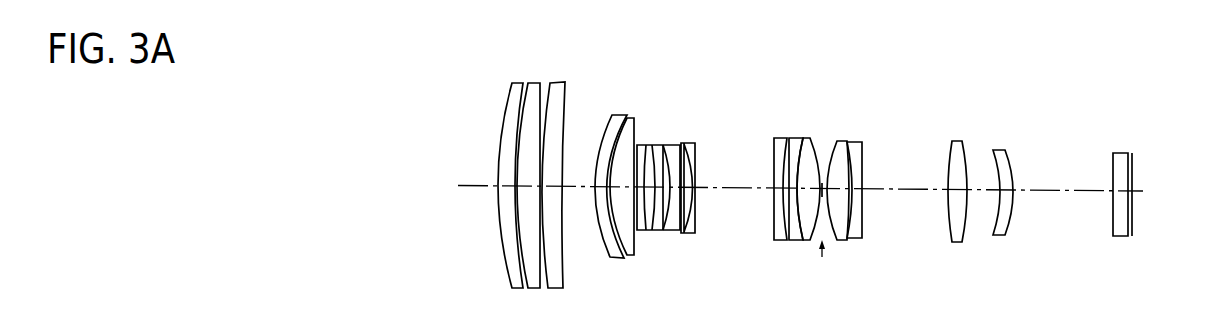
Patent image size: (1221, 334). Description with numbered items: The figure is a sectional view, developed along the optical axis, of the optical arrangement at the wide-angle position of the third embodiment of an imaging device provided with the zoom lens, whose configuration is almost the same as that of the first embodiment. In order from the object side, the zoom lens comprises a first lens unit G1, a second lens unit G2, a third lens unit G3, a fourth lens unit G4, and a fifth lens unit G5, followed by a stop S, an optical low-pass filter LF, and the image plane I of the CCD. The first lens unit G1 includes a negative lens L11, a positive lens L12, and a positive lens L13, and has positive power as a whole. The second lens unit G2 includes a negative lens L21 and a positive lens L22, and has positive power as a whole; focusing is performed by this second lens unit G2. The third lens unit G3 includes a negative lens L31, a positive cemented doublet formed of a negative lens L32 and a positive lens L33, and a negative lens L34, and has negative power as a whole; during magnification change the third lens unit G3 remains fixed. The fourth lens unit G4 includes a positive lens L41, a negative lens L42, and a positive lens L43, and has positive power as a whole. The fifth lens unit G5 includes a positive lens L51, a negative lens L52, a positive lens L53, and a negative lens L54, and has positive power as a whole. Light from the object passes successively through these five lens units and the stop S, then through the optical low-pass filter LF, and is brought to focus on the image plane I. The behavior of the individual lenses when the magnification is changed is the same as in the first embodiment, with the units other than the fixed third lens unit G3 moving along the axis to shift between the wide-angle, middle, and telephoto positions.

The first lens unit G1 is at (526, 185).
The negative lens L11 is at (517, 83).
The positive lens L12 is at (535, 83).
The positive lens L13 is at (563, 162).
The second lens unit G2 is at (612, 175).
The negative lens L21 is at (620, 113).
The positive lens L22 is at (634, 268).
The third lens unit G3 is at (684, 169).
The negative lens L31 is at (645, 145).
The negative lens L32 is at (662, 145).
The positive lens L33 is at (677, 145).
The negative lens L34 is at (708, 135).
The fourth lens unit G4 is at (793, 170).
The positive lens L41 is at (780, 137).
The negative lens L42 is at (800, 138).
The positive lens L43 is at (816, 153).
The stop S is at (823, 140).
The fifth lens unit G5 is at (920, 170).
The positive lens L51 is at (843, 140).
The negative lens L52 is at (855, 140).
The positive lens L53 is at (957, 140).
The negative lens L54 is at (999, 150).
The optical low-pass filter LF is at (1122, 237).
The image plane I is at (1132, 227).